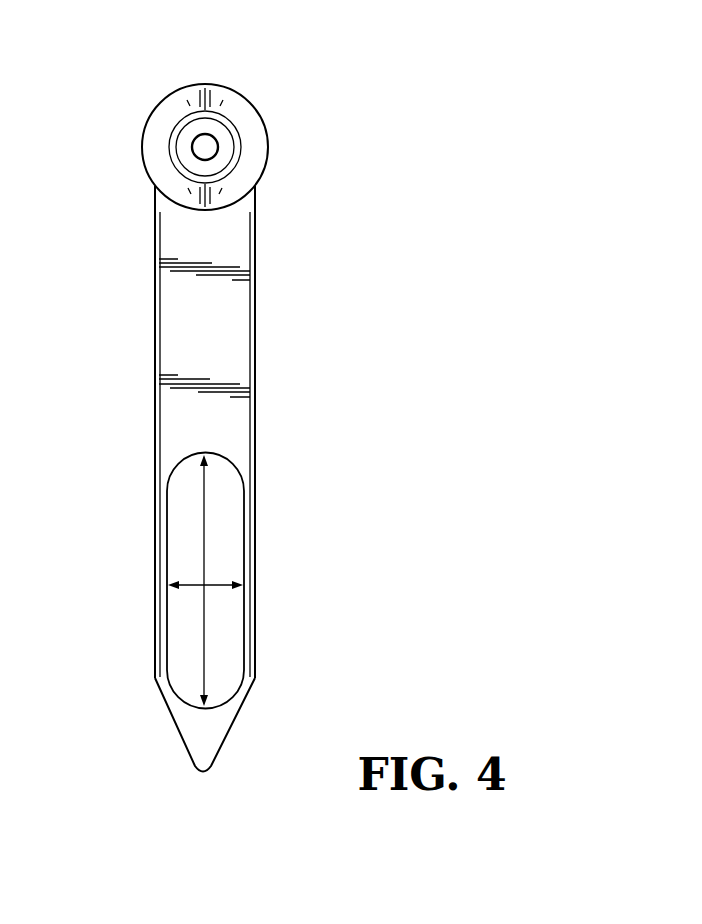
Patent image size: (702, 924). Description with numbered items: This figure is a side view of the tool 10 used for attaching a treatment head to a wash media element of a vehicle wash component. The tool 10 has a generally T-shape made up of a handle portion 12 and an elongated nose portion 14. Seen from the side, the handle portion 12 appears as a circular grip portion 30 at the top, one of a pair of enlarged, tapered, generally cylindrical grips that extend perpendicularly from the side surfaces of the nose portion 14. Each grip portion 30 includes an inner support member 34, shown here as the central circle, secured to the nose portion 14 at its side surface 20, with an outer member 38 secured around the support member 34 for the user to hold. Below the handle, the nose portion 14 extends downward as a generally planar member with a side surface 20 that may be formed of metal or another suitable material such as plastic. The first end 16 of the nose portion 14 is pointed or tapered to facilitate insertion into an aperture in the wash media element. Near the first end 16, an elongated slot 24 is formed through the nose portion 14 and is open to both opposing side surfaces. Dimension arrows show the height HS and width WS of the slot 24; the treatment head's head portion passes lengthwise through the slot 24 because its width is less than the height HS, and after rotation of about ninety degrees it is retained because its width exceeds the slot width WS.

The tool 10 is at (306, 137).
The handle portion 12 is at (165, 87).
The nose portion 14 is at (238, 325).
The first end 16 is at (237, 725).
The side surface 20 is at (233, 368).
The slot 24 is at (232, 535).
The grip portion 30 is at (203, 84).
The inner support member 34 is at (206, 144).
The outer member 38 is at (155, 152).
The slot height HS is at (203, 643).
The slot width WS is at (215, 585).